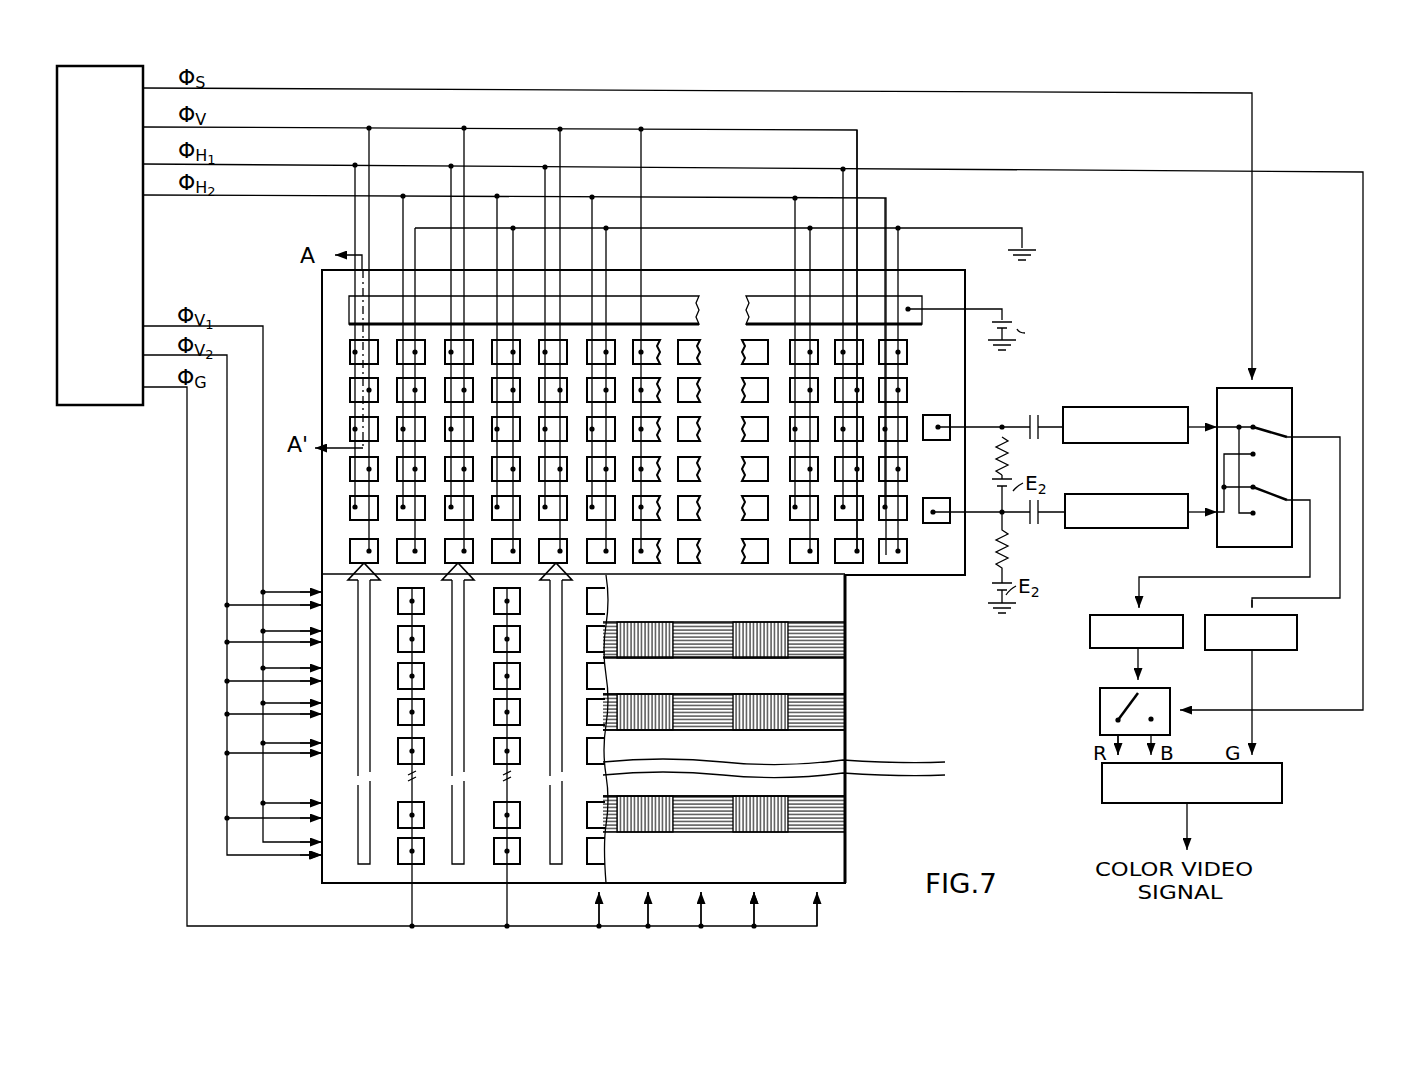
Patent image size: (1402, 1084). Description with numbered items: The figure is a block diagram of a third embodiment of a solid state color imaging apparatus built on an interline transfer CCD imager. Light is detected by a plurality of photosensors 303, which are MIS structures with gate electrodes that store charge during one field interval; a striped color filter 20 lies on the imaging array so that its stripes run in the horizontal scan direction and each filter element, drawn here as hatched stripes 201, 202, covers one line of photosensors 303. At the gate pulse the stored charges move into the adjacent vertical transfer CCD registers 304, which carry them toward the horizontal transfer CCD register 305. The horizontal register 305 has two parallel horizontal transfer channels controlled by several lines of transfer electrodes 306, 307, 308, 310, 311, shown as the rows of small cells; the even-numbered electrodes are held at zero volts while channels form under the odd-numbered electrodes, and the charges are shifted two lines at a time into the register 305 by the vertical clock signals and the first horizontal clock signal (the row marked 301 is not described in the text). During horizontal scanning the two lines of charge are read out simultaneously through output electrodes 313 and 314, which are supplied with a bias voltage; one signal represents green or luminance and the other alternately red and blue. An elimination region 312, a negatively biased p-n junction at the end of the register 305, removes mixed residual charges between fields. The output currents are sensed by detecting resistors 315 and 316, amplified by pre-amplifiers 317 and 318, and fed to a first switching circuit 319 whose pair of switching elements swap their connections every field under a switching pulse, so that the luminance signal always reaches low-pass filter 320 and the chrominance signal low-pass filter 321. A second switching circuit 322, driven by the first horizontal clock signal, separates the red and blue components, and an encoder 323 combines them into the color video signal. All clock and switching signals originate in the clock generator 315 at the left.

The clock generator 315 is at (135, 406).
The horizontal transfer CCD register 305 is at (936, 270).
The elimination region 312 is at (908, 305).
The line of transfer electrodes 311 is at (349, 346).
The line of transfer electrodes 310 is at (349, 388).
The picture element row 301 is at (349, 430).
The line of transfer electrodes 308 is at (349, 466).
The line of transfer electrodes 307 is at (349, 506).
The line of transfer electrodes 306 is at (349, 549).
The output electrode 313 is at (941, 398).
The output electrode 314 is at (941, 481).
The detecting resistor 316 is at (1010, 558).
The pre-amplifier 317 is at (1119, 407).
The pre-amplifier 318 is at (1127, 498).
The first switching circuit 319 is at (1272, 388).
The low-pass filter 320 is at (1234, 612).
The low-pass filter 321 is at (1117, 612).
The second switching circuit 322 is at (1163, 689).
The encoder 323 is at (1283, 779).
The vertical transfer CCD register 304 is at (363, 866).
The photosensor 303 is at (494, 866).
The color filter stripe 202 is at (719, 696).
The color filter stripe 201 is at (744, 698).
The striped color filter 20 is at (827, 858).